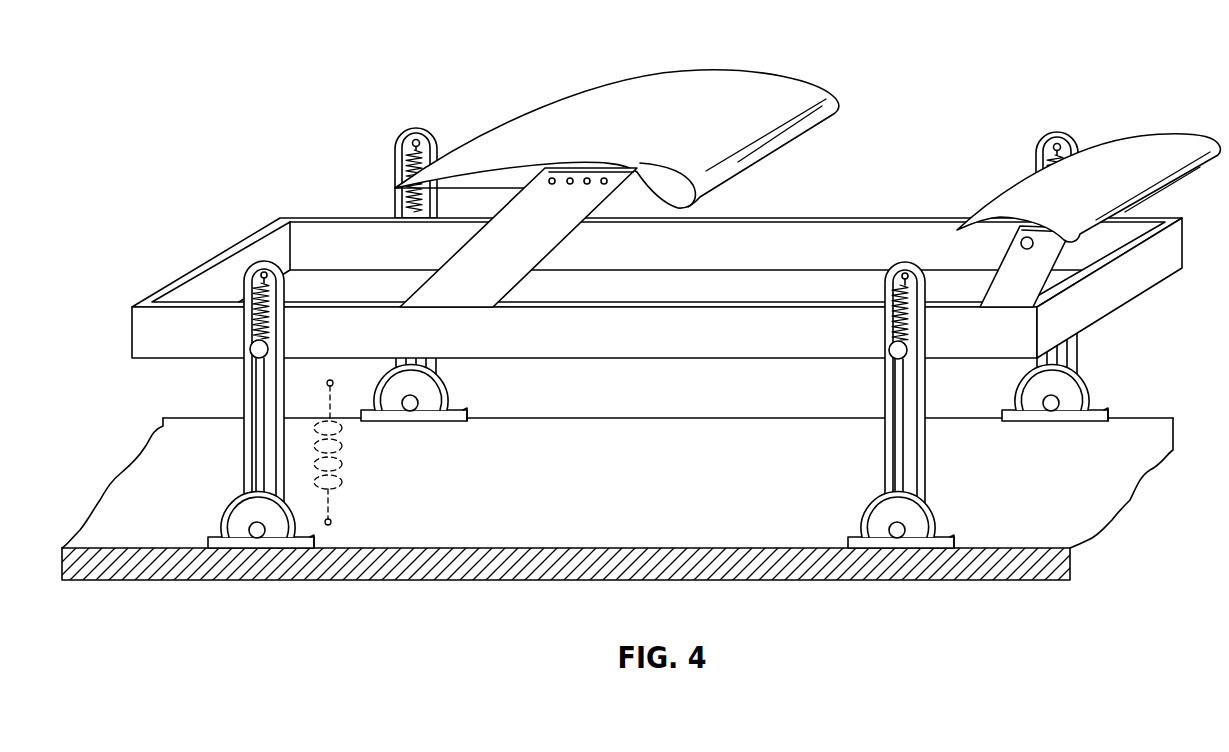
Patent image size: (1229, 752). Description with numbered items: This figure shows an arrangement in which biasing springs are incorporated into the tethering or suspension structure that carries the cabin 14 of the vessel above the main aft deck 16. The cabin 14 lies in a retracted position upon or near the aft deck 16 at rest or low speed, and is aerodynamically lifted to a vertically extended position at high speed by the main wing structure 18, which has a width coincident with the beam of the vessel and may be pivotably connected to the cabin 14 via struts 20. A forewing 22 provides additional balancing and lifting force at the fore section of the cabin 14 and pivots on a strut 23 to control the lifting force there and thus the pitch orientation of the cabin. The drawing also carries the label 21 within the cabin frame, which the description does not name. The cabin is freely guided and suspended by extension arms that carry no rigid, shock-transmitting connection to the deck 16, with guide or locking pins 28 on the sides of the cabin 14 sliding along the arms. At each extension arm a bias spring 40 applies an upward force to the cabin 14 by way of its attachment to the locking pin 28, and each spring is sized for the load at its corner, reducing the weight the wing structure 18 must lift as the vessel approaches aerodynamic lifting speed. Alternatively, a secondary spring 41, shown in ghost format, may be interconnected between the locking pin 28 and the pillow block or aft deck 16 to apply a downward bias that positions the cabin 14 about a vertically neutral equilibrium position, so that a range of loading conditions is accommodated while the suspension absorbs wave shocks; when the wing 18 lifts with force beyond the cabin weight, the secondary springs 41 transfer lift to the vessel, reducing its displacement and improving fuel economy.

The cabin 14 is at (851, 216).
The main aft deck 16 is at (584, 493).
The main wing structure 18 is at (729, 92).
The struts 20 is at (580, 227).
The frame interior 21 is at (661, 299).
The forewing 22 is at (1150, 148).
The strut 23 is at (1022, 280).
The guide pin 28 is at (253, 355).
The bias spring 40 is at (268, 320).
The secondary spring 41 is at (343, 460).